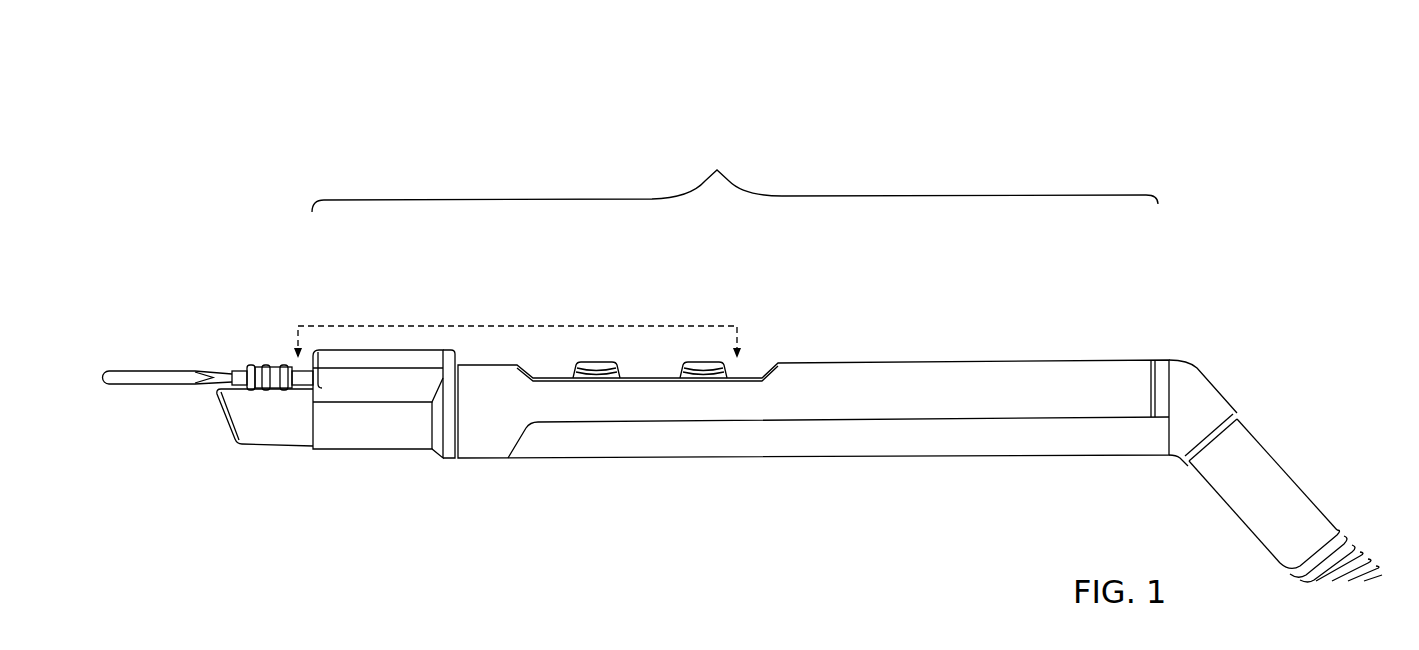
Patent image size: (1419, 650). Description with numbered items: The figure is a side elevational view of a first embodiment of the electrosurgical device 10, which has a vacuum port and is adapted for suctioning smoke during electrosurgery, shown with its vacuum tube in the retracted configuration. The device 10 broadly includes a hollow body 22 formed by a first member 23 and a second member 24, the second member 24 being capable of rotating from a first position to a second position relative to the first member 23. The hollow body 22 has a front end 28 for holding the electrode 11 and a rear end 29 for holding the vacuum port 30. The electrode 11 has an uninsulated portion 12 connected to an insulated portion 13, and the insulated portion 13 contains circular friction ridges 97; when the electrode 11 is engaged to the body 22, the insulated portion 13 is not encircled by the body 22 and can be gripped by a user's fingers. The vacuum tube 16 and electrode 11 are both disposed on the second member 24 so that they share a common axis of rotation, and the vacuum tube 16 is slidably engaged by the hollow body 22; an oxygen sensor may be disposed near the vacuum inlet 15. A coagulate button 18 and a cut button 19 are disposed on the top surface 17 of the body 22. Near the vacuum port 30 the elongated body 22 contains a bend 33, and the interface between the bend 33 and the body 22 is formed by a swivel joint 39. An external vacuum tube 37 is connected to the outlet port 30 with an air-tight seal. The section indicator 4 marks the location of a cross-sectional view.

The electrosurgical device 10 is at (1057, 112).
The electrode 11 is at (120, 279).
The uninsulated portion 12 is at (141, 373).
The insulated portion 13 is at (277, 366).
The vacuum inlet 15 is at (220, 417).
The vacuum tube 16 is at (273, 432).
The top surface 17 is at (764, 369).
The coagulate button 18 is at (578, 362).
The cut button 19 is at (685, 362).
The hollow body 22 is at (735, 177).
The first member 23 is at (840, 403).
The second member 24 is at (382, 437).
The front end 28 is at (195, 175).
The rear end 29 is at (1317, 310).
The vacuum port 30 is at (1280, 492).
The bend 33 is at (1201, 396).
The external vacuum tube 37 is at (1353, 548).
The swivel joint 39 is at (1171, 357).
The section line 4- 4 is at (517, 328).
The circular friction ridges 97 is at (248, 362).